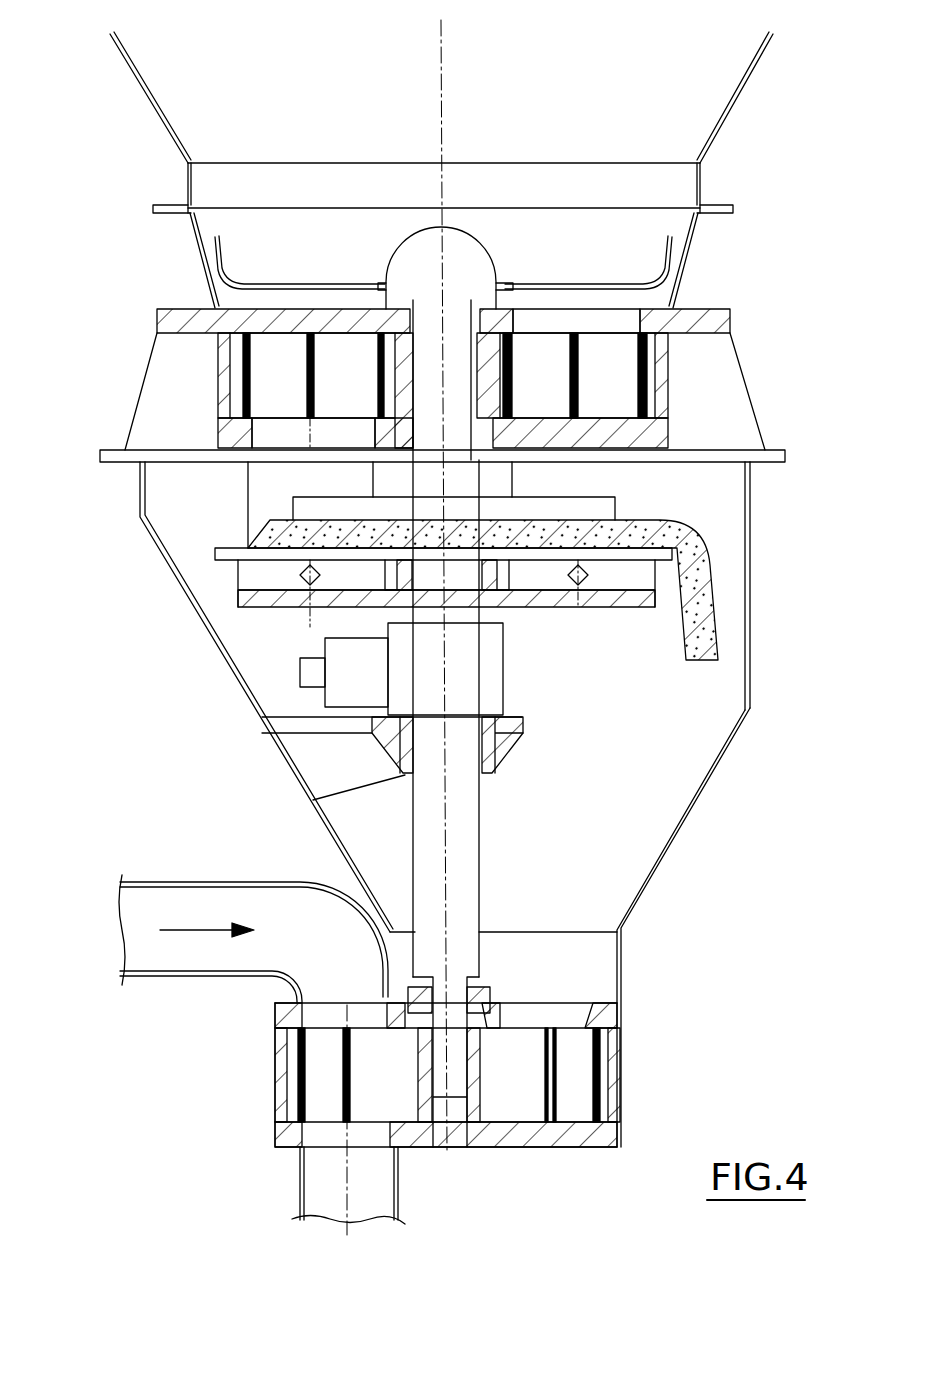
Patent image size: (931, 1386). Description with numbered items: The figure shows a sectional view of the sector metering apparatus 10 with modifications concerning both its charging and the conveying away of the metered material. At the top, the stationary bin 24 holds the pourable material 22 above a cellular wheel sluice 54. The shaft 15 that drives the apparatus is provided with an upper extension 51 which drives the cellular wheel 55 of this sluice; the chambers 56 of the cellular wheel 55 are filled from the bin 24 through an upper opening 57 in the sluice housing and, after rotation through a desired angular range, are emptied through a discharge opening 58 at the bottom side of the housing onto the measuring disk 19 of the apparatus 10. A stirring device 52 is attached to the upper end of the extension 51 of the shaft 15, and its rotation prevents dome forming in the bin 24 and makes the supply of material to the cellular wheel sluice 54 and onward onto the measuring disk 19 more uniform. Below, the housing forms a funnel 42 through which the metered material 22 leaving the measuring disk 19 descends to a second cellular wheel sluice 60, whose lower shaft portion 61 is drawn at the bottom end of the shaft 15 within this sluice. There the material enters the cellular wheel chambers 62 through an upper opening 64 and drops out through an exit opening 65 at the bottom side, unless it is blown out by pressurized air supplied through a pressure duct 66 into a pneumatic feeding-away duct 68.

The sector metering apparatus 10 is at (714, 520).
The shaft 15 is at (470, 489).
The measuring disk 19 is at (217, 550).
The pourable material 22 is at (710, 598).
The bin 24 is at (702, 126).
The funnel 42 is at (670, 850).
The upper extension 51 is at (455, 337).
The stirring device 52 is at (547, 283).
The cellular wheel sluice 54 is at (145, 335).
The cellular wheel 55 is at (633, 368).
The chambers 56 is at (342, 375).
The upper opening 57 is at (615, 317).
The discharge opening 58 is at (278, 438).
The cellular wheel sluice 60 is at (450, 1040).
The shaft end 61 is at (455, 1100).
The cellular wheel chambers 62 is at (592, 1098).
The upper opening 64 is at (568, 1013).
The exit opening 65 is at (332, 1133).
The pressure duct 66 is at (233, 975).
The pneumatic feeding-away duct 68 is at (293, 1183).